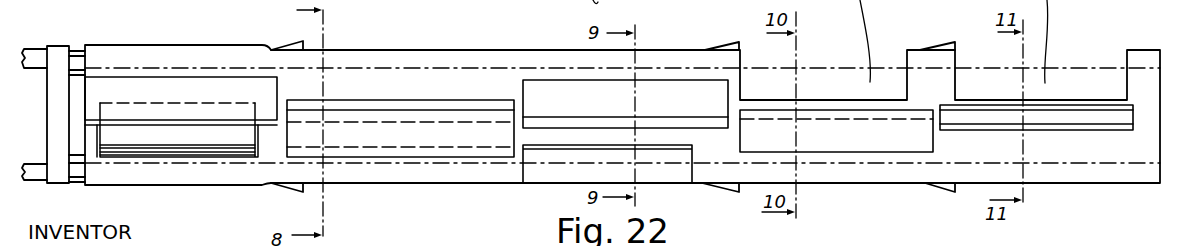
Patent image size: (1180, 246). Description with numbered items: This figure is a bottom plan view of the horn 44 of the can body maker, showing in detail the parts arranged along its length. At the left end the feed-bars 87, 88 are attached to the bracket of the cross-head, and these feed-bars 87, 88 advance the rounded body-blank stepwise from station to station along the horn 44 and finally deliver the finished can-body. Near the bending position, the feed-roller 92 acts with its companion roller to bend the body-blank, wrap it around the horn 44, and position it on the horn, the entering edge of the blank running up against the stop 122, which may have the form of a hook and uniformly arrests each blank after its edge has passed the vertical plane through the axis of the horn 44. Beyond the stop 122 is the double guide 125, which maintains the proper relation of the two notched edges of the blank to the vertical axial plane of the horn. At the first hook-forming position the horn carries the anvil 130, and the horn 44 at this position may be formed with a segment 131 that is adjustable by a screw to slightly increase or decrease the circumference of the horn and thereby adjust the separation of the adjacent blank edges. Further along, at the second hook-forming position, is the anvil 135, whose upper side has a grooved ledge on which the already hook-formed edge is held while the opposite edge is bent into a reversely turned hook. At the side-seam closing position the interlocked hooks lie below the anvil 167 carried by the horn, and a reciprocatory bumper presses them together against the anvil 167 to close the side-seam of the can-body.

The feed-bar 87 is at (35, 58).
The feed-bar 88 is at (32, 172).
The stop 122 is at (187, 88).
The feed-roller 92 is at (237, 135).
The horn 44 is at (407, 85).
The double guide 125 is at (417, 115).
The anvil 130 is at (557, 97).
The segment 131 is at (675, 172).
The anvil 135 is at (823, 138).
The anvil 167 is at (1035, 118).